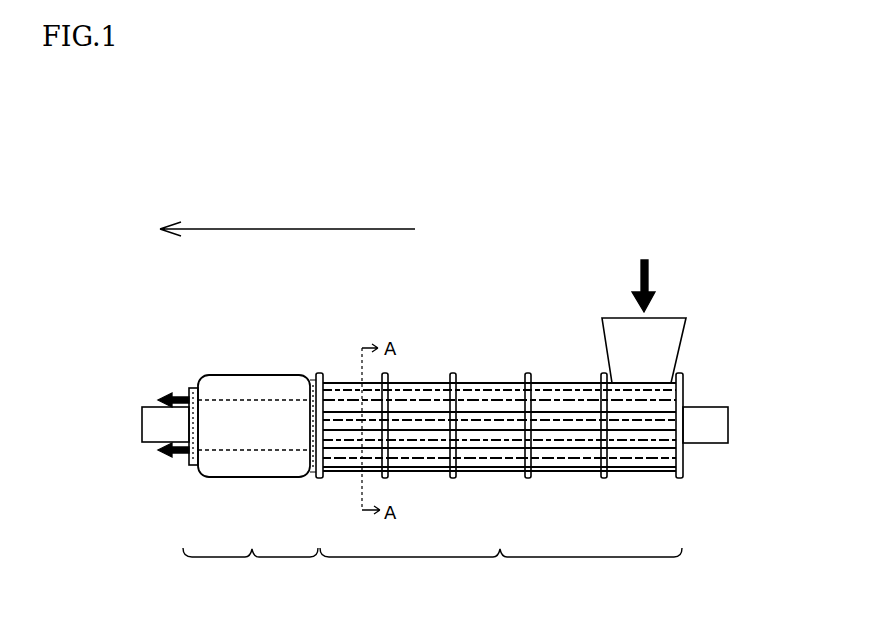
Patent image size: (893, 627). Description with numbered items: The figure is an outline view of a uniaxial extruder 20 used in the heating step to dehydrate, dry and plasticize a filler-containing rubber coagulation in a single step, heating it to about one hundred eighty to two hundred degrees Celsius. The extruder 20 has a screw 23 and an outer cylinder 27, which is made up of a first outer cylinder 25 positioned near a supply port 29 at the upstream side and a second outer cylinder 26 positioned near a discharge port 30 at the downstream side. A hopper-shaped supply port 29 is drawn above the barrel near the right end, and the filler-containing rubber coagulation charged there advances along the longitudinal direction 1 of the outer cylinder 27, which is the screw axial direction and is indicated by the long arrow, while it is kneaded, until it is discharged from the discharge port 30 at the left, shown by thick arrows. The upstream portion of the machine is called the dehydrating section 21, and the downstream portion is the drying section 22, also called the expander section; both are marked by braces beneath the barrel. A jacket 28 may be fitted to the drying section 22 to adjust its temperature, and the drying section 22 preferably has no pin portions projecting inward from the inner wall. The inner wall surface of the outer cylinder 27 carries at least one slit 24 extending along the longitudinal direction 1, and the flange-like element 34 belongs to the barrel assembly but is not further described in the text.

The direction 1 is at (318, 223).
The uniaxial extruder 20 is at (492, 266).
The dehydrating section 21 is at (501, 569).
The drying section 22 is at (250, 569).
The screw 23 is at (706, 412).
The slit 24 is at (458, 410).
The first outer cylinder 25 is at (442, 394).
The second outer cylinder 26 is at (312, 376).
The outer cylinder 27 is at (493, 412).
The jacket 28 is at (220, 382).
The supply port 29 is at (668, 318).
The discharge port 30 is at (186, 462).
The intermediate flange 34 is at (603, 480).